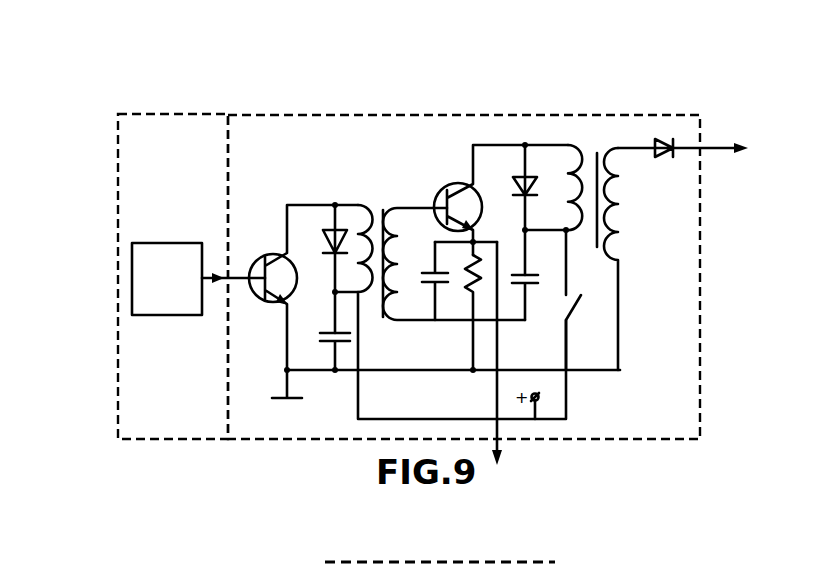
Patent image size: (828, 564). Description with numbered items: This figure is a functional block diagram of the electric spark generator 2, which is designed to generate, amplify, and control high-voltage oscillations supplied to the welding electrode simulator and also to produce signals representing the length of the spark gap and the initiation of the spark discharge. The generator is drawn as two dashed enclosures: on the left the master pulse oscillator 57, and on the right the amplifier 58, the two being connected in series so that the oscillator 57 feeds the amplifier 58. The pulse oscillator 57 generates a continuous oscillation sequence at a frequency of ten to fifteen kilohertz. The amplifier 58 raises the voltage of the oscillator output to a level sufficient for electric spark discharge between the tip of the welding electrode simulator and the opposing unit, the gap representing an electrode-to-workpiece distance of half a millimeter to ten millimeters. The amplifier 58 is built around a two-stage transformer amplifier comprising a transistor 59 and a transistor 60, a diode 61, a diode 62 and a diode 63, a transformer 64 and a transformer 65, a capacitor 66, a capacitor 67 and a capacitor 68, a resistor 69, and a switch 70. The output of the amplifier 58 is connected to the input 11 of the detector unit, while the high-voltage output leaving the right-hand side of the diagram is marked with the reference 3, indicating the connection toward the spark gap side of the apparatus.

The electric spark generator 2 is at (179, 447).
The spark gap (output connection) 3 is at (705, 130).
The input 11 is at (516, 358).
The master pulse oscillator 57 is at (90, 290).
The amplifier 58 is at (276, 447).
The transistor 59 is at (263, 257).
The transistor 60 is at (458, 183).
The diode 61 is at (326, 238).
The diode 62 is at (518, 180).
The diode 63 is at (658, 157).
The transformer 64 is at (390, 200).
The transformer 65 is at (611, 146).
The capacitor 66 is at (325, 331).
The capacitor 67 is at (430, 272).
The capacitor 68 is at (532, 274).
The resistor 69 is at (470, 287).
The switch 70 is at (575, 308).